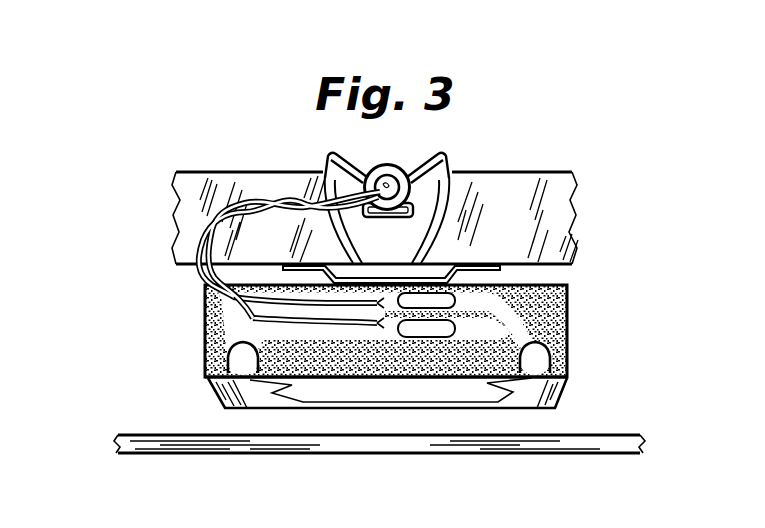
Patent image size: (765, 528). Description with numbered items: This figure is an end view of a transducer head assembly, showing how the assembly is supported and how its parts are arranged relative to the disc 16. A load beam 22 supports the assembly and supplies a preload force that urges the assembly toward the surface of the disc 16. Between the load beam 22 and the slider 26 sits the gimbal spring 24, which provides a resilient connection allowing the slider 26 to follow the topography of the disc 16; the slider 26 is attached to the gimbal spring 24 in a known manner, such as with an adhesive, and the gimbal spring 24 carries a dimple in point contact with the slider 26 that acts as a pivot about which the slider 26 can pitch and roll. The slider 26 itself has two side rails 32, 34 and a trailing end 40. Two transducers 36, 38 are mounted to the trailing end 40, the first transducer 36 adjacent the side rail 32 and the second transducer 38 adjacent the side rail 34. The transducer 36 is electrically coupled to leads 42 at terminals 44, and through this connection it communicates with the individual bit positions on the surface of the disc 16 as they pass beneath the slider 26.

The disc 16 is at (155, 435).
The load beam 22 is at (503, 173).
The gimbal spring 24 is at (500, 268).
The slider 26 is at (575, 332).
The side rail 32 is at (222, 398).
The side rail 34 is at (556, 402).
The transducer 36 is at (240, 360).
The transducer 38 is at (538, 360).
The trailing end 40 is at (212, 314).
The leads 42 is at (257, 193).
The terminals 44 is at (388, 279).